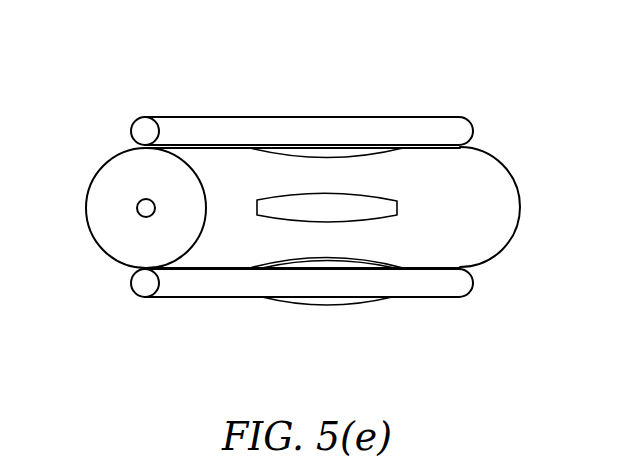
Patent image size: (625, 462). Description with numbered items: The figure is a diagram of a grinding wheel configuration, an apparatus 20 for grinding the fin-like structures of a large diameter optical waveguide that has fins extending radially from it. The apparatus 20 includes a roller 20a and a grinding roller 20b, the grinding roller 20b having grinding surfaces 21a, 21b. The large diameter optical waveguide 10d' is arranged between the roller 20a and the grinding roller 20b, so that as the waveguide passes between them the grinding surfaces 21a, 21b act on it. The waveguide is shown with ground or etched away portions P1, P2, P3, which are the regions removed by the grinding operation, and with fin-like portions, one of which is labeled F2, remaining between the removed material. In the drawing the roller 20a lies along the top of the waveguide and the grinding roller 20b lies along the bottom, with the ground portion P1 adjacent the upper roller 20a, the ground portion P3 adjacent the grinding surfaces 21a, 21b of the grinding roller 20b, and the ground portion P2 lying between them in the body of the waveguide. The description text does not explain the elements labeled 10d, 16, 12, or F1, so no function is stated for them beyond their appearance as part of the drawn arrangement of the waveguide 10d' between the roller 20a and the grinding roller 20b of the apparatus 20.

The apparatus 20 is at (152, 89).
The roller 20a is at (410, 128).
The grinding roller 20b is at (433, 290).
The left roller 10d is at (133, 194).
The large diameter optical waveguide 10d' is at (524, 207).
The belt 16 is at (96, 210).
The shaft 12 is at (140, 215).
The force F1 is at (310, 177).
The fin-like portion F2 is at (305, 238).
The ground or etched away portion P1 is at (358, 150).
The ground or etched away portion P2 is at (397, 208).
The ground or etched away portion P3 is at (358, 252).
The grinding surface 21a is at (358, 302).
The grinding surface 21b is at (295, 268).